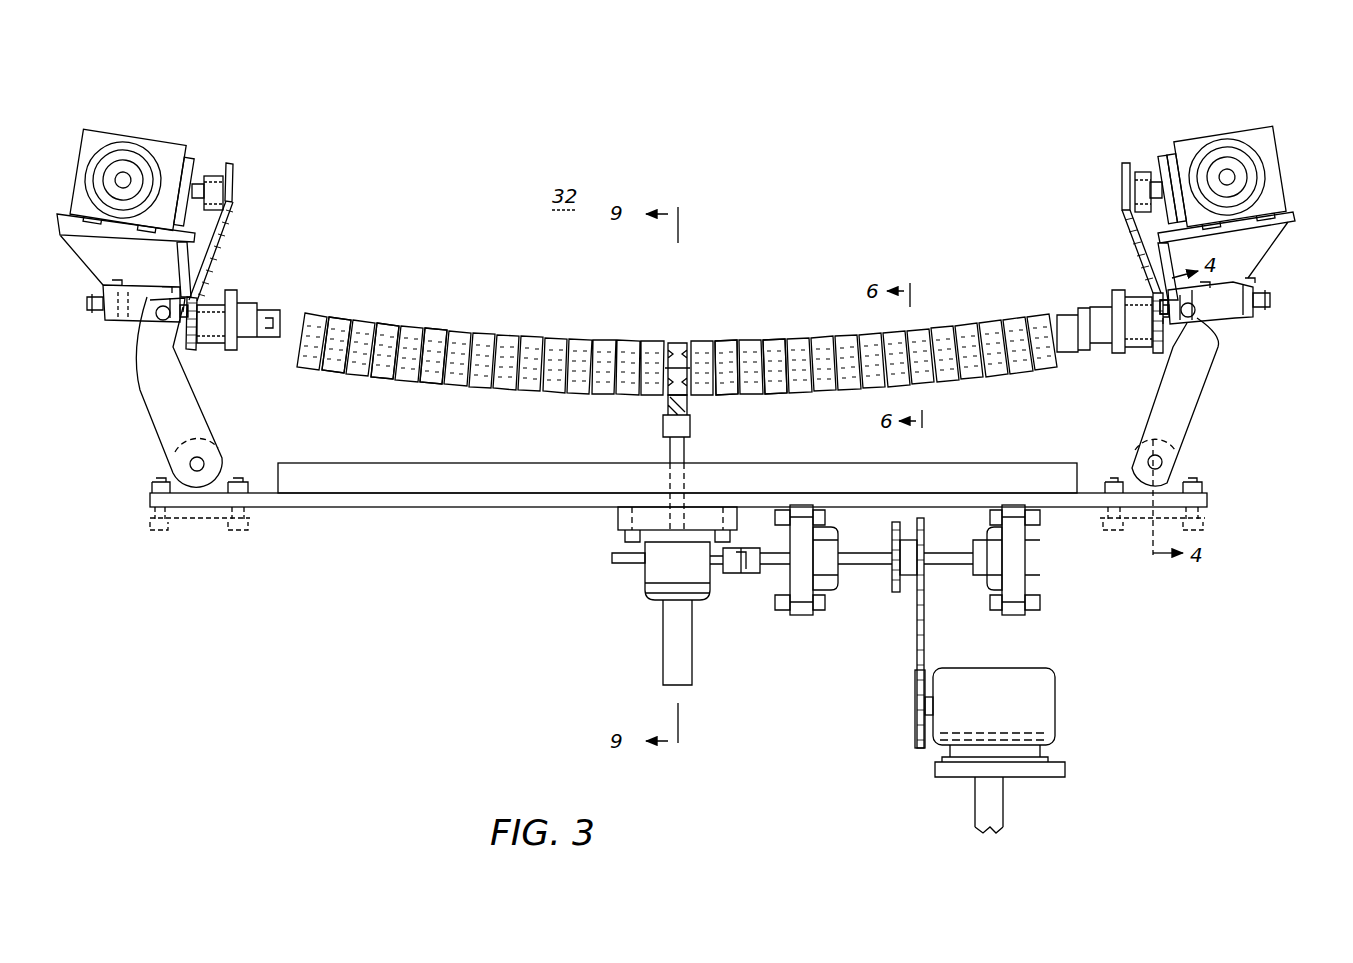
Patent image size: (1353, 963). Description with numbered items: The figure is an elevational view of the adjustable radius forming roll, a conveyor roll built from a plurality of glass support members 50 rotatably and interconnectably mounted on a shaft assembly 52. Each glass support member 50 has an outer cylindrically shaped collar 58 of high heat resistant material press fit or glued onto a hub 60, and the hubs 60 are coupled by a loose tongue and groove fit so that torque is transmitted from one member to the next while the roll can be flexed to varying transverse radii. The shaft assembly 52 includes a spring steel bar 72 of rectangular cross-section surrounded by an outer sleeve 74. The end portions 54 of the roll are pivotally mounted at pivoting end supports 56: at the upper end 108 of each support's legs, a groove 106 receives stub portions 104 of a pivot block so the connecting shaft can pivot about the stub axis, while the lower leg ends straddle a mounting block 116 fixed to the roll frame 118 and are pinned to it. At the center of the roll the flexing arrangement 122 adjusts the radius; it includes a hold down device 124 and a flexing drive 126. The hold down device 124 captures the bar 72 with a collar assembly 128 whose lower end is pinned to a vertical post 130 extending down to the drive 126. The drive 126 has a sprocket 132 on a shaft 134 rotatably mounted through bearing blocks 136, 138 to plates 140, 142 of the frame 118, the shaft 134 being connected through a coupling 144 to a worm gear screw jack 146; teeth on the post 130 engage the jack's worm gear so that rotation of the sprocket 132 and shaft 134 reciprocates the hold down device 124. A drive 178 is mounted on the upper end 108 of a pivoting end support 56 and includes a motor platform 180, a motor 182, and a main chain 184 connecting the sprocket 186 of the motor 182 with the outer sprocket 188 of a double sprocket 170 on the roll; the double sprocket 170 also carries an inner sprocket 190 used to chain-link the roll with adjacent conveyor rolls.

The glass support members 50 is at (303, 325).
The shaft assembly 52 is at (342, 333).
The end portions 54 is at (88, 302).
The pivoting end supports 56 is at (142, 393).
The outer cylindrically shaped collar 58 is at (720, 341).
The hub 60 is at (770, 350).
The bar 72 is at (385, 350).
The outer sleeve 74 is at (445, 358).
The stub portions 104 is at (1195, 318).
The groove 106 is at (1200, 323).
The upper end 108 is at (135, 320).
The mounting block 116 is at (178, 484).
The roll frame 118 is at (1210, 498).
The flexing arrangement 122 is at (600, 531).
The hold down device 124 is at (690, 425).
The flexing drive 126 is at (912, 706).
The collar assembly 128 is at (677, 343).
The vertical post 130 is at (688, 448).
The sprocket 132 is at (895, 592).
The shaft 134 is at (948, 552).
The bearing block 136 is at (810, 617).
The bearing block 138 is at (1005, 617).
The plate 140 is at (785, 578).
The plate 142 is at (1030, 548).
The coupling 144 is at (728, 575).
The worm gear screw jack 146 is at (645, 593).
The double sprocket 170 is at (1110, 298).
The drive 178 is at (163, 126).
The motor platform 180 is at (1293, 213).
The motor 182 is at (1273, 143).
The main chain 184 is at (215, 268).
The sprocket 186 is at (236, 196).
The outer sprocket 188 is at (199, 352).
The inner sprocket 190 is at (222, 360).